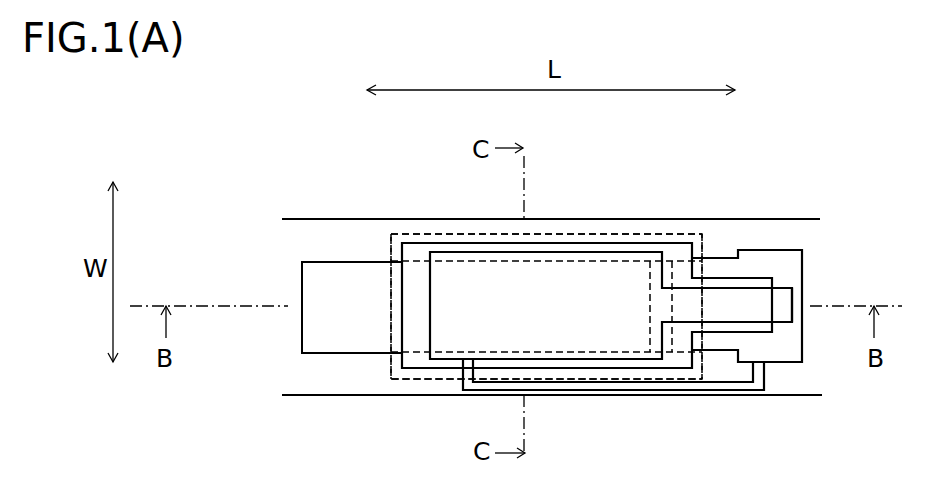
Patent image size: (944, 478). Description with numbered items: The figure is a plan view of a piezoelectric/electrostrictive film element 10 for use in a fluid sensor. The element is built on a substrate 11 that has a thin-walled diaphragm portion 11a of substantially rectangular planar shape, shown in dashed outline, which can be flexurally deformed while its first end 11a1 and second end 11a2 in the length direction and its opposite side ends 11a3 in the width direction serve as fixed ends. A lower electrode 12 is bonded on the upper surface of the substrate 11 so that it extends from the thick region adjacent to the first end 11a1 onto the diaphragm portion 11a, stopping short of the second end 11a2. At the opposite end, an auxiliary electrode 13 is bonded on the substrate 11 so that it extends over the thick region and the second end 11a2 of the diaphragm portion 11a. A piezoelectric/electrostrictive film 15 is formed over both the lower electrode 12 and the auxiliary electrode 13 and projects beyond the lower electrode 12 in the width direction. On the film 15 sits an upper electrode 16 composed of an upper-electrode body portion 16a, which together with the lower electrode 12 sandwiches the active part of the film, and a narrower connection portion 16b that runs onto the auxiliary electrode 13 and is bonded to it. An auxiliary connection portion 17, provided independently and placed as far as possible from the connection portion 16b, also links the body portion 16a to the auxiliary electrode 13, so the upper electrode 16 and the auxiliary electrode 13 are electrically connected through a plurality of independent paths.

The piezoelectric/electrostrictive film element 10 is at (881, 140).
The substrate 11 is at (352, 230).
The thin-walled diaphragm portion 11a is at (428, 381).
The first end 11a1 is at (390, 362).
The second end 11a2 is at (702, 363).
The side ends 11a3 is at (395, 220).
The lower electrode 12 is at (303, 342).
The auxiliary electrode 13 is at (760, 257).
The piezoelectric/electrostrictive film 15 is at (443, 248).
The upper electrode 16 is at (665, 250).
The upper-electrode body portion 16a is at (595, 258).
The connection portion 16b is at (757, 293).
The auxiliary connection portion 17 is at (763, 390).